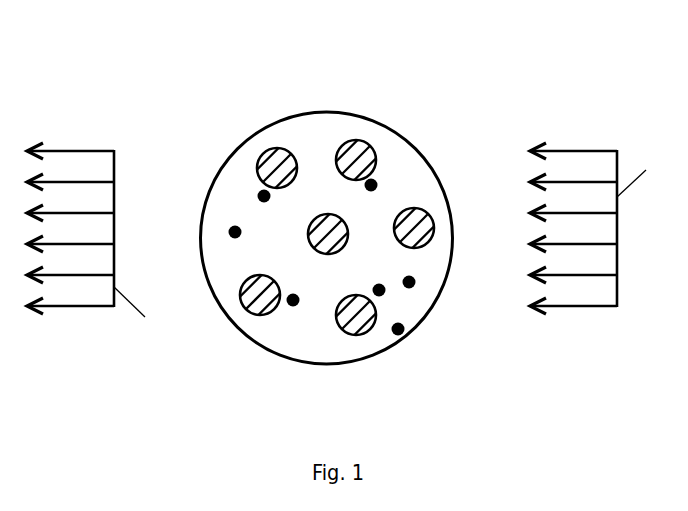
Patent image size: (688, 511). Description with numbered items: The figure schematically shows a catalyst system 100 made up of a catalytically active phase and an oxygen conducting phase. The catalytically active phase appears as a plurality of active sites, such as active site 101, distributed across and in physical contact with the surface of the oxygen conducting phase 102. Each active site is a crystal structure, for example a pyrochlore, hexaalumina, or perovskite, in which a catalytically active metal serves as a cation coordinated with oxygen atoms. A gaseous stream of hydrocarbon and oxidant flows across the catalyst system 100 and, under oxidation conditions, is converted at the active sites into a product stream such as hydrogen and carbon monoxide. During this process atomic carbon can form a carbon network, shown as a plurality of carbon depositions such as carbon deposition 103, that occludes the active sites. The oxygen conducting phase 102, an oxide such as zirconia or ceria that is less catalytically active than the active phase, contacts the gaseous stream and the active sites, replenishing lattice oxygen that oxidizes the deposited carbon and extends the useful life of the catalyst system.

The catalyst system 100 is at (227, 69).
The active site 101 is at (355, 150).
The oxygen conducting phase 102 is at (403, 170).
The carbon deposition 103 is at (412, 284).